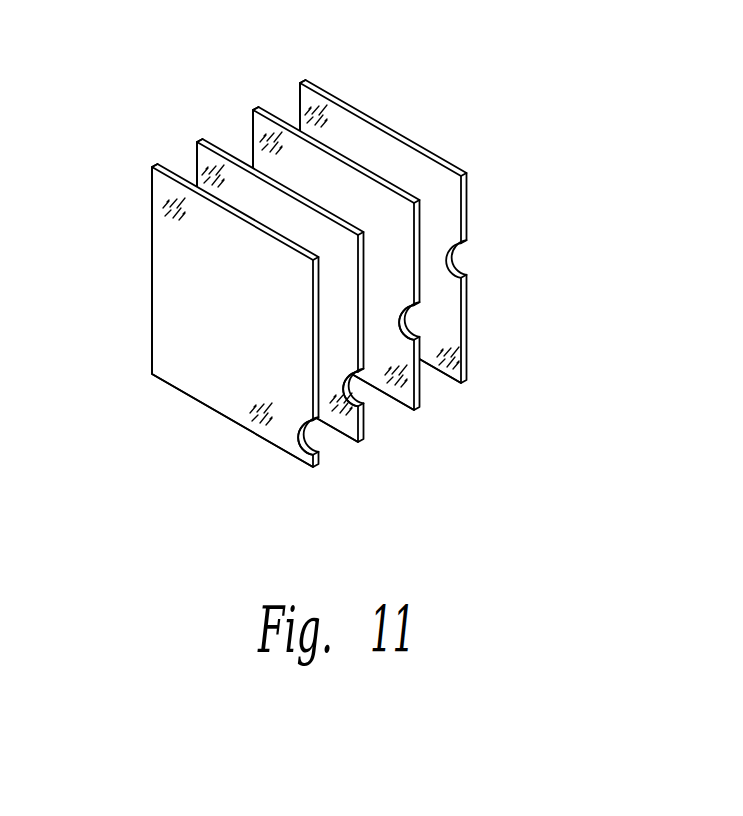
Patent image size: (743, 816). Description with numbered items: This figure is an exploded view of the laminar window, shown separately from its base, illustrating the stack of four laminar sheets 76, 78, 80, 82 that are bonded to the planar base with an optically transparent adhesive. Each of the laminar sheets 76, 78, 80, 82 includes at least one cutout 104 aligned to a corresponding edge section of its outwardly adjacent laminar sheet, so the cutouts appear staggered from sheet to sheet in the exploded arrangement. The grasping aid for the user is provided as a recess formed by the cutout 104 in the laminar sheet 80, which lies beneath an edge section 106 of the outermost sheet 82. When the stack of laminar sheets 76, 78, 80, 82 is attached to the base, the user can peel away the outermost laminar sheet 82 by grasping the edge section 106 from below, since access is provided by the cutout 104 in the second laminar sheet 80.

The laminar sheet 76 is at (468, 328).
The laminar sheet 78 is at (420, 402).
The laminar sheet 80 is at (363, 431).
The outermost laminar sheet 82 is at (233, 421).
The cutout 104 is at (303, 472).
The edge section 106 is at (288, 400).